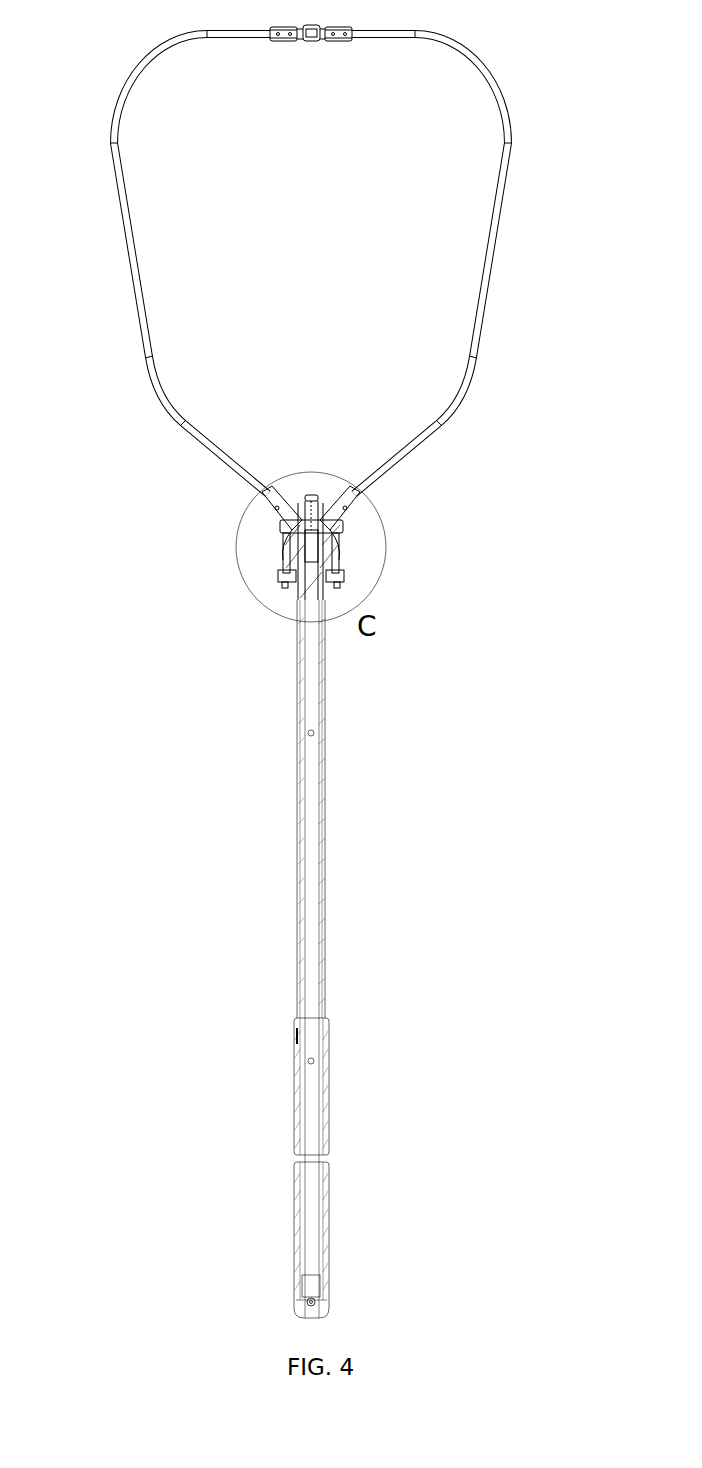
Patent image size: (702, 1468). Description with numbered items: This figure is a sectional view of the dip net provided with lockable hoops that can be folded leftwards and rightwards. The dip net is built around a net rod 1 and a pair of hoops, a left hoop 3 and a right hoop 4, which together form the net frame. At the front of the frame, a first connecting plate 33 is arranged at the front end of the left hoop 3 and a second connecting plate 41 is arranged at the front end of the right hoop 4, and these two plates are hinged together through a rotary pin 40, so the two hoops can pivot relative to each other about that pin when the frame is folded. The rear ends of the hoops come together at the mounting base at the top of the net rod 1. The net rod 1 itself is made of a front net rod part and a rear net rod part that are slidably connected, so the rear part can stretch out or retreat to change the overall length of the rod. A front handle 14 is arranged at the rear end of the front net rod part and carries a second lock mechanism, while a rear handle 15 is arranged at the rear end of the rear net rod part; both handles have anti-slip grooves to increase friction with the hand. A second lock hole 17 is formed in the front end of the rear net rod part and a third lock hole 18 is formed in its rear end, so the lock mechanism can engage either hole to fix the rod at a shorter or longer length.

The net rod 1 is at (314, 808).
The left hoop 3 is at (130, 238).
The right hoop 4 is at (490, 258).
The front handle 14 is at (297, 1100).
The rear handle 15 is at (297, 1245).
The second lock hole 17 is at (308, 735).
The third lock hole 18 is at (314, 1060).
The first connecting plate 33 is at (288, 42).
The rotary pin 40 is at (310, 42).
The second connecting plate 41 is at (337, 42).